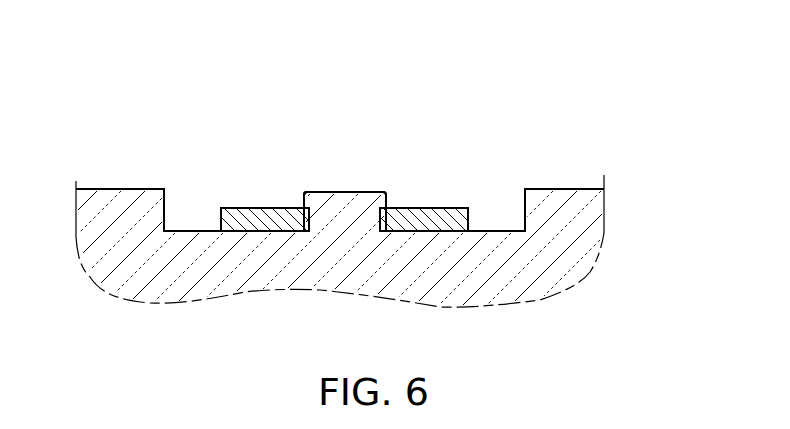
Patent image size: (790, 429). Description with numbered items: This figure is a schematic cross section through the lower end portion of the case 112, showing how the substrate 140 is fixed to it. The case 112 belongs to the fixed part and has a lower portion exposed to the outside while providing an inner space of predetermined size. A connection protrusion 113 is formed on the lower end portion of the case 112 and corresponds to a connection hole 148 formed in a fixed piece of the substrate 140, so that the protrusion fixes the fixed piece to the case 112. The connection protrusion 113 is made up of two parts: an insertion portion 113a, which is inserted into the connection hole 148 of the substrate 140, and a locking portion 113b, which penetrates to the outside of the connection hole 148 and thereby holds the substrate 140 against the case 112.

The case 112 is at (543, 264).
The substrate 140 is at (257, 208).
The connection hole 148 is at (325, 208).
The connection protrusion 113 is at (495, 68).
The locking portion 113b is at (363, 198).
The insertion portion 113a is at (412, 215).